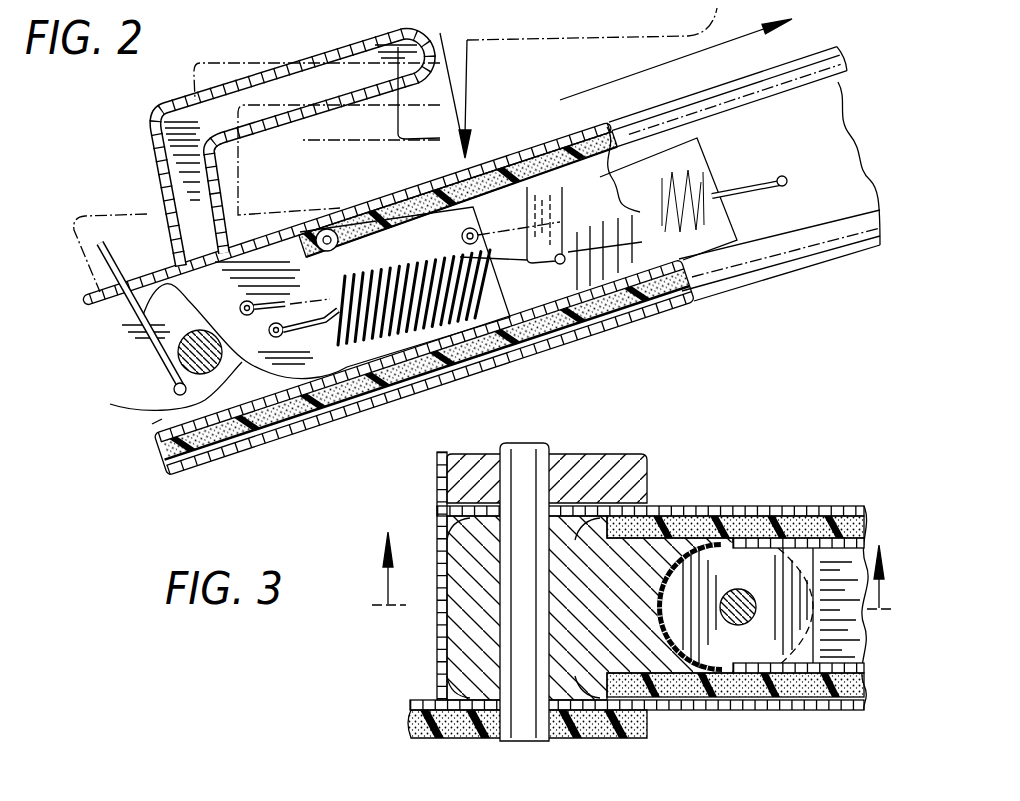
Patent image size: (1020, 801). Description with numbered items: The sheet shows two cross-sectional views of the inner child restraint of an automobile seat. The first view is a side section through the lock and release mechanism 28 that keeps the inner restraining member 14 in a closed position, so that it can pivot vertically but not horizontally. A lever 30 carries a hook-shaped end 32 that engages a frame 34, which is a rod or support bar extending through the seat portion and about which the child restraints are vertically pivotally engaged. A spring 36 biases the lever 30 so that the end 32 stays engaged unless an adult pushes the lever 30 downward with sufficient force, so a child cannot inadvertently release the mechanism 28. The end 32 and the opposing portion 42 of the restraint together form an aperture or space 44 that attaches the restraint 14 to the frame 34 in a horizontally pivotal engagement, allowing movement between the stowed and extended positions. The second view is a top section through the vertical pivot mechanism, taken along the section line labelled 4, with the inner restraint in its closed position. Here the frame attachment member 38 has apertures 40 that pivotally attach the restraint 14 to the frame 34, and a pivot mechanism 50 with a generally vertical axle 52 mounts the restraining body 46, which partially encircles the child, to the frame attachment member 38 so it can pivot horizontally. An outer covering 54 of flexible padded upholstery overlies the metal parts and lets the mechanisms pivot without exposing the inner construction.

In FIG. 3, the section line 4- 4 is at (632, 552).
In FIG. 2, the inner child restraining member 14 is at (801, 45).
In FIG. 3, the inner child restraining member 14 is at (740, 500).
In FIG. 2, the lock and release mechanism 28 is at (138, 174).
In FIG. 2, the lever 30 is at (340, 52).
In FIG. 2, the hook-shaped end 32 is at (142, 385).
In FIG. 2, the frame 34 is at (162, 331).
In FIG. 3, the frame 34 is at (534, 455).
In FIG. 2, the spring 36 is at (358, 390).
In FIG. 3, the frame attachment member 38 is at (468, 632).
In FIG. 3, the apertures 40 is at (492, 518).
In FIG. 2, the opposing portion 42 is at (142, 420).
In FIG. 2, the aperture or space 44 is at (248, 392).
In FIG. 3, the restraining body 46 is at (845, 620).
In FIG. 3, the pivot mechanism 50 is at (726, 642).
In FIG. 3, the vertical axle 52 is at (742, 595).
In FIG. 2, the outer covering 54 is at (403, 195).
In FIG. 3, the outer covering 54 is at (440, 543).